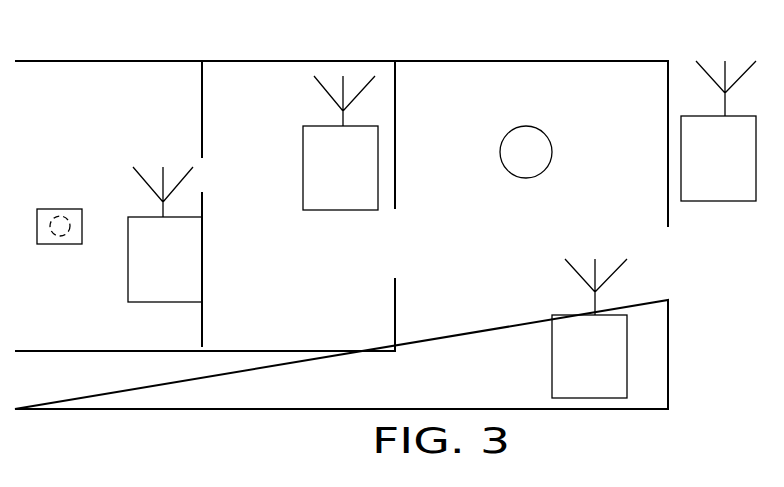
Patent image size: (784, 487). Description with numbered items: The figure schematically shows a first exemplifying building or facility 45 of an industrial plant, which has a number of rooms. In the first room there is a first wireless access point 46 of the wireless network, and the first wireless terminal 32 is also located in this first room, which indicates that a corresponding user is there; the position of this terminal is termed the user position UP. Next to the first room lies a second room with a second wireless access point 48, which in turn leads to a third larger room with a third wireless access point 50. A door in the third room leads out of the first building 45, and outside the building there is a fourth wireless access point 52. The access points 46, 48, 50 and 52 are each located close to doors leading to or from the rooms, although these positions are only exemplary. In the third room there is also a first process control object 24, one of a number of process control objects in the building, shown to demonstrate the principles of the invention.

The first building 45 is at (272, 61).
The first wireless terminal 32 is at (60, 209).
The first wireless access point 46 is at (165, 234).
The second wireless access point 48 is at (340, 143).
The third wireless access point 50 is at (589, 328).
The fourth wireless access point 52 is at (718, 131).
The first process control object 24 is at (549, 139).